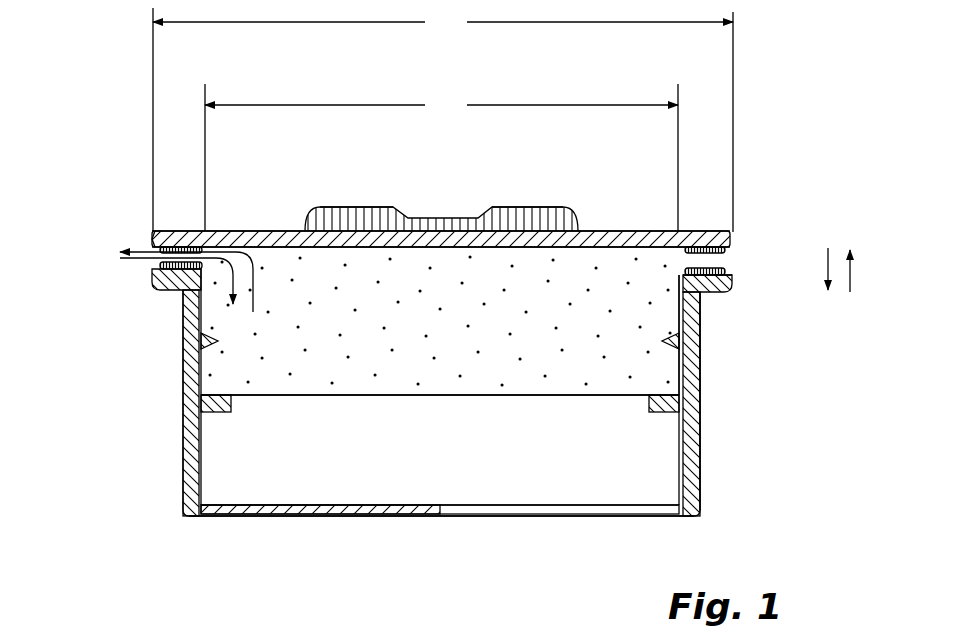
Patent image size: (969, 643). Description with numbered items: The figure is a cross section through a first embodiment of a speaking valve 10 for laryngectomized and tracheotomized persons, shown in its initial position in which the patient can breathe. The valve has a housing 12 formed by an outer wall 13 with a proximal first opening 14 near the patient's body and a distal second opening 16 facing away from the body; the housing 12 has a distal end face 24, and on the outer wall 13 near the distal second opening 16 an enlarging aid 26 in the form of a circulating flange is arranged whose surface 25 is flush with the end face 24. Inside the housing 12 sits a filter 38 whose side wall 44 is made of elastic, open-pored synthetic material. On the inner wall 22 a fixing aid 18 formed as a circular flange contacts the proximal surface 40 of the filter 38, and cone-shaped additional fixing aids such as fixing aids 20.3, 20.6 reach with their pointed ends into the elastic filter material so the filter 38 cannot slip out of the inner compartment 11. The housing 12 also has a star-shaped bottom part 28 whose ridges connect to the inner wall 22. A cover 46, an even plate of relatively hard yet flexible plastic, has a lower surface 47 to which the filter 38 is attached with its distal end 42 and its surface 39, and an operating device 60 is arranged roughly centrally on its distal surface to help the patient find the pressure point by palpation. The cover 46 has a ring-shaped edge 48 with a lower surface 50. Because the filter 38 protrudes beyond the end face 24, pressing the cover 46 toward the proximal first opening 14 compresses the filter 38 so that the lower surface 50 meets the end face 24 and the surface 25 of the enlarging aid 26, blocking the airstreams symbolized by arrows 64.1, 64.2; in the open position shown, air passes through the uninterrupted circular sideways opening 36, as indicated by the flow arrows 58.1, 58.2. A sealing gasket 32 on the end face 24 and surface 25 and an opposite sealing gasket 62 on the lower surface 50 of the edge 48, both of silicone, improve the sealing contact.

The speaking valve 10 is at (751, 106).
The inner compartment 11 is at (411, 462).
The housing 12 is at (690, 402).
The outer wall 13 is at (703, 447).
The proximal first opening 14 is at (555, 490).
The distal second opening 16 is at (628, 232).
The fixing aid 18 is at (218, 413).
The additional fixing aid 20.3 is at (676, 358).
The additional fixing aid 20.6 is at (216, 346).
The inner wall 22 is at (206, 470).
The distal end face 24 is at (704, 250).
The surface of enlarging aid 25 is at (725, 271).
The enlarging aid 26 is at (723, 292).
The bottom part 28 is at (393, 513).
The sealing gasket 32 is at (156, 268).
The sideways opening 36 is at (723, 258).
The filter 38 is at (444, 330).
The surface of distal end 39 is at (509, 238).
The proximal surface 40 is at (507, 400).
The distal end 42 is at (272, 240).
The side wall 44 is at (200, 376).
The cover 46 is at (610, 261).
The lower surface 47 is at (356, 252).
The edge 48 is at (184, 227).
The lower surface of edge 50 is at (680, 292).
The air flow direction 58.1 is at (828, 266).
The air flow direction 58.2 is at (850, 285).
The operating device 60 is at (415, 209).
The sealing gasket 62 is at (158, 245).
The arrow 64.1 is at (206, 289).
The arrow 64.2 is at (254, 299).